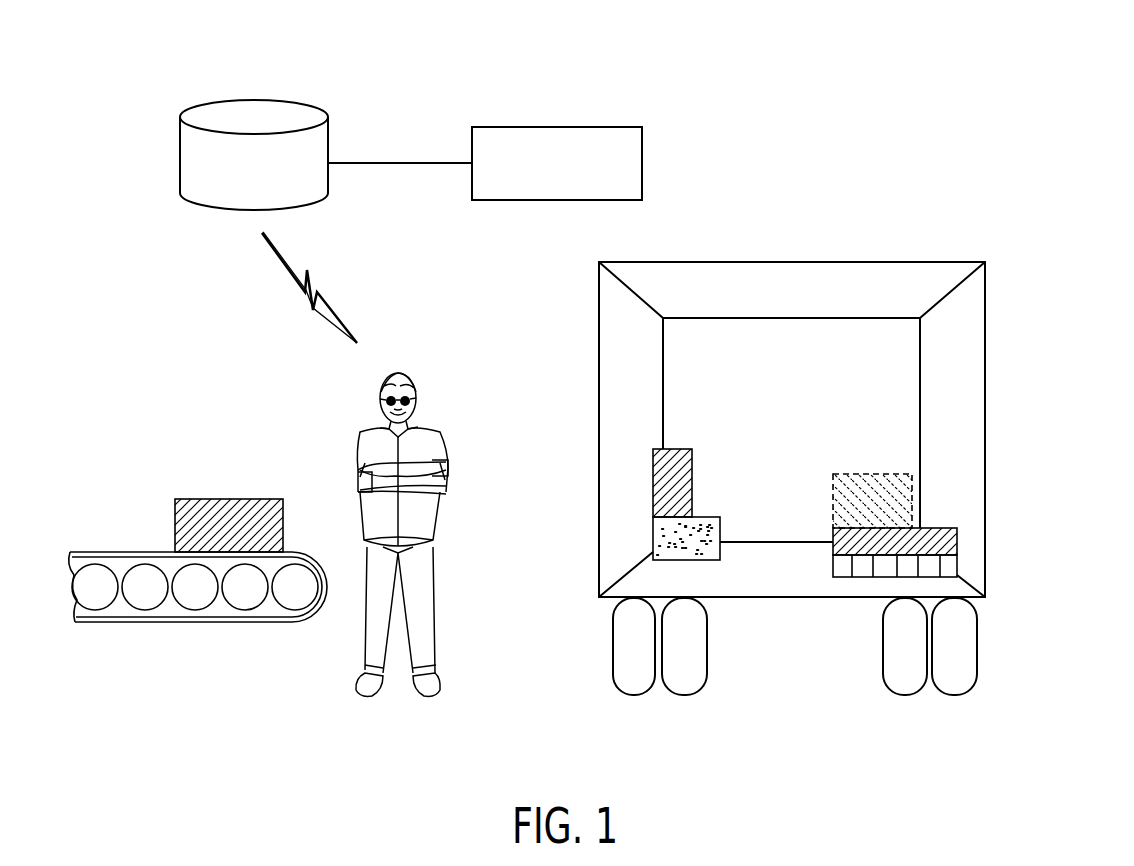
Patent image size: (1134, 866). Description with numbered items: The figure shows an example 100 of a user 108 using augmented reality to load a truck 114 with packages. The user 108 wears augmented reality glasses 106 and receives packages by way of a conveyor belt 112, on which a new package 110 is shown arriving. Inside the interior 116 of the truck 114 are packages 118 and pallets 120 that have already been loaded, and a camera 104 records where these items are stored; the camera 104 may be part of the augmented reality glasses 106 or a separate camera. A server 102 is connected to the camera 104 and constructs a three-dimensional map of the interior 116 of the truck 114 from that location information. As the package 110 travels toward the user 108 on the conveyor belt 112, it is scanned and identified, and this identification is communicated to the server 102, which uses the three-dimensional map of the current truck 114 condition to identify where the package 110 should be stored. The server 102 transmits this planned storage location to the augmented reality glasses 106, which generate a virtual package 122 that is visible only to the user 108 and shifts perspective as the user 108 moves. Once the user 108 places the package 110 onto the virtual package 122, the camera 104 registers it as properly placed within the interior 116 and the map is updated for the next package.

The example 100 is at (864, 92).
The server 102 is at (307, 102).
The camera 104 is at (599, 127).
The augmented reality glasses 106 is at (412, 400).
The user 108 is at (455, 514).
The package 110 is at (177, 498).
The conveyor belt 112 is at (208, 623).
The truck 114 is at (930, 260).
The interior 116 is at (758, 347).
The packages 118 is at (675, 449).
The pallets 120 is at (833, 562).
The virtual package 122 is at (857, 473).